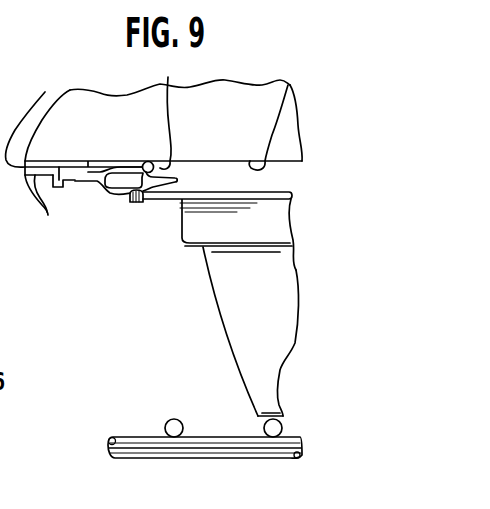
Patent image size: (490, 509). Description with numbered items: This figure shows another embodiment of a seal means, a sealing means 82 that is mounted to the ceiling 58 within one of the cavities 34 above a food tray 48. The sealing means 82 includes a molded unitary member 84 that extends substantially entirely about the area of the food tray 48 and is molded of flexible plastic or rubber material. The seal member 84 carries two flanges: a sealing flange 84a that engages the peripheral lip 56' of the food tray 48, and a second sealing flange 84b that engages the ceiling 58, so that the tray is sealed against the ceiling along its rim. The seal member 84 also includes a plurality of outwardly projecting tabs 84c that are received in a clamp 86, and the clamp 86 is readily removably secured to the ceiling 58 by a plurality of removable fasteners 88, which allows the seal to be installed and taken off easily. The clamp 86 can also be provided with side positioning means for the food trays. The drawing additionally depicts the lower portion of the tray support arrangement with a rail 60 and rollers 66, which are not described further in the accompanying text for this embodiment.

The cavity 34 is at (192, 359).
The food tray 48 is at (216, 318).
The peripheral lip 56' is at (219, 244).
The ceiling 58 is at (293, 75).
The rail 60 is at (132, 437).
The rollers 66 is at (265, 430).
The sealing means 82 is at (98, 152).
The molded unitary member 84 is at (101, 193).
The sealing flange 84a is at (141, 202).
The second sealing flange 84b is at (168, 77).
The outwardly projecting tabs 84c is at (72, 188).
The clamp 86 is at (42, 115).
The removable fasteners 88 is at (50, 208).